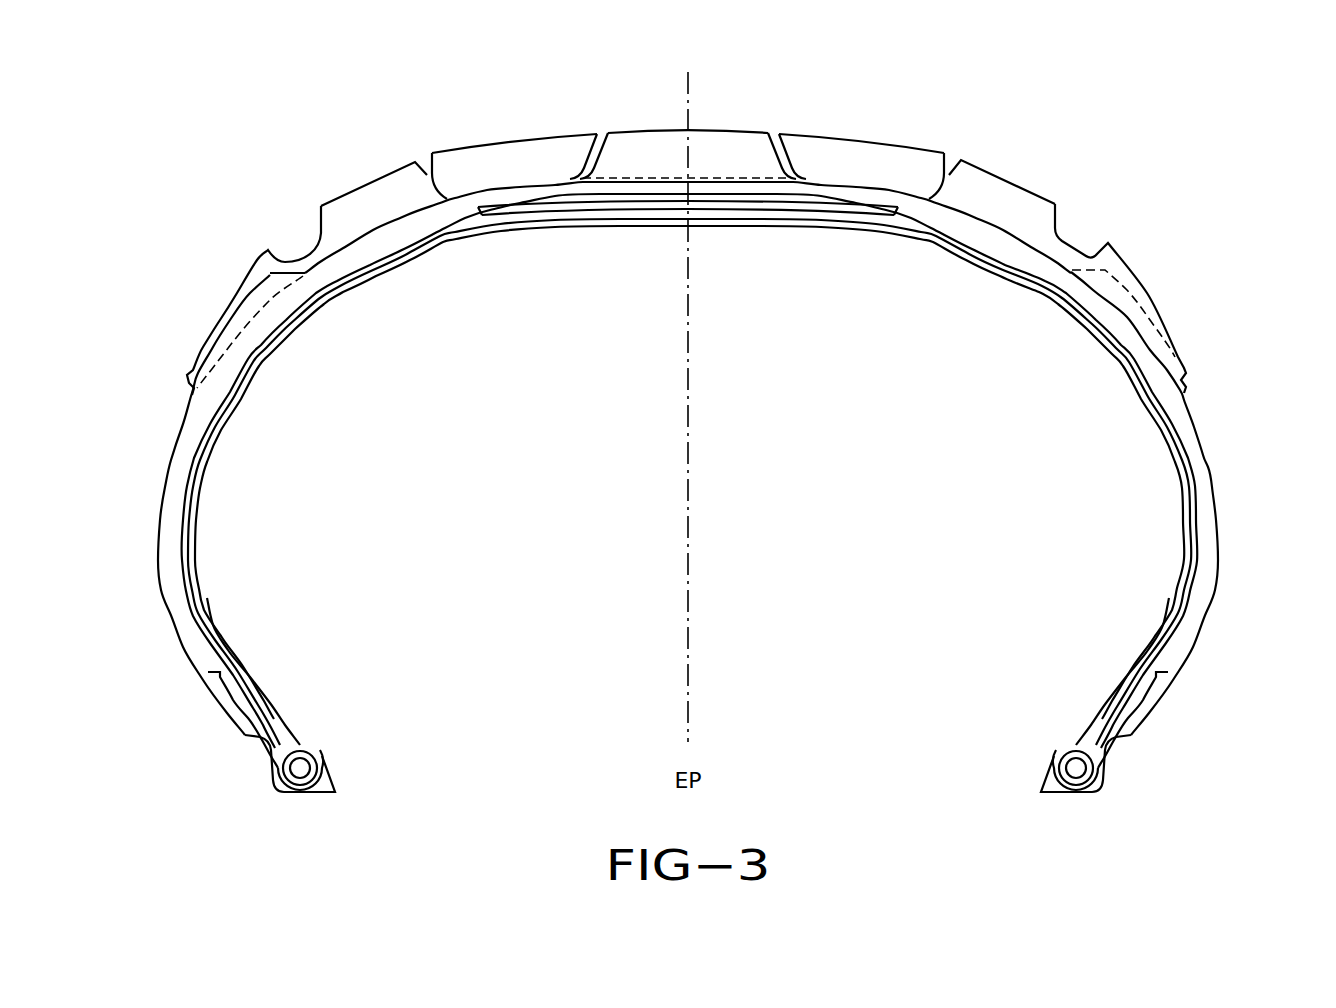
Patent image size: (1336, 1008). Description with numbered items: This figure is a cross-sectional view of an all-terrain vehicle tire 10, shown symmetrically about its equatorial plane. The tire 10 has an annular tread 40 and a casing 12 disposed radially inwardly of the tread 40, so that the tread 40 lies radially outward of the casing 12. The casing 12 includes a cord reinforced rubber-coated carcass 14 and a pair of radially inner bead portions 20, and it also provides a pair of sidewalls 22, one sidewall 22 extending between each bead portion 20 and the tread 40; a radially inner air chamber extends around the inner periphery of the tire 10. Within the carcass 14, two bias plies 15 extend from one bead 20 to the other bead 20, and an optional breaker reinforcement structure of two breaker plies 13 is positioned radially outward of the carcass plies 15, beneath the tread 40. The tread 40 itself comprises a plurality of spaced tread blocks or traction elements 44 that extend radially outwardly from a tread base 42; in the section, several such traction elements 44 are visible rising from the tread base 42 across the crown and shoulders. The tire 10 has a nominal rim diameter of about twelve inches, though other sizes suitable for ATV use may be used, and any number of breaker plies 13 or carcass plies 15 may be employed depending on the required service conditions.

The all-terrain vehicle tire 10 is at (1232, 282).
The casing 12 is at (1212, 409).
The breaker plies 13 is at (767, 192).
The carcass 14 is at (1212, 523).
The bias plies 15 is at (1172, 607).
The bead portions 20 is at (296, 771).
The sidewalls 22 is at (1205, 567).
The tread 40 is at (849, 118).
The tread base 42 is at (487, 190).
The tread blocks 44 is at (370, 196).